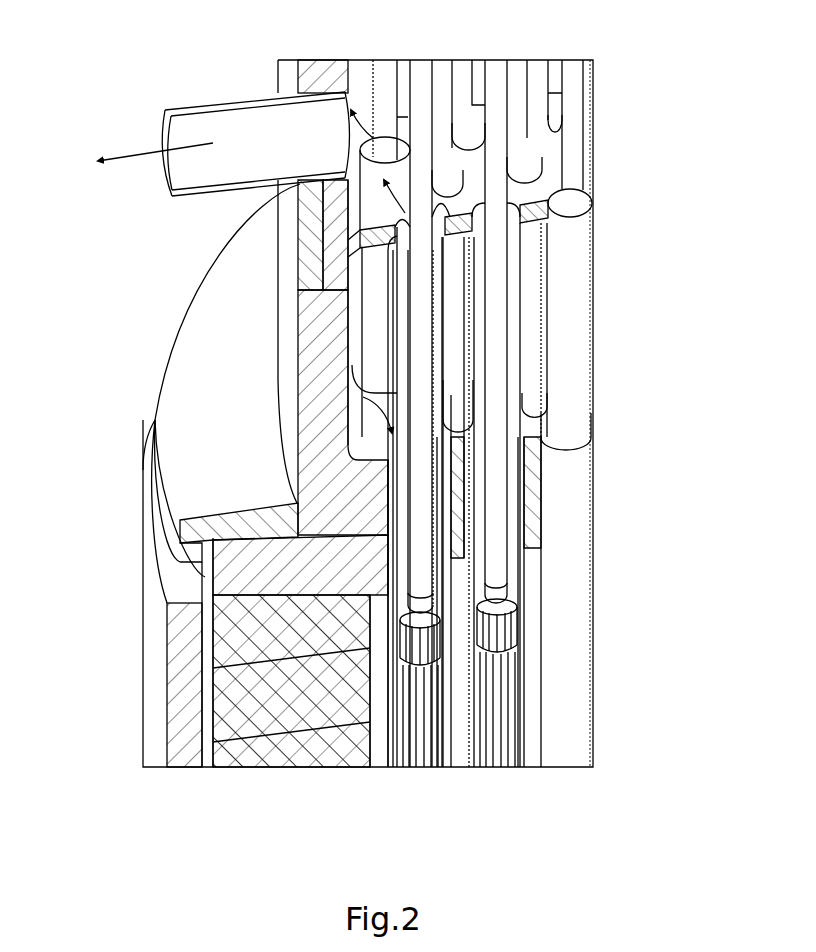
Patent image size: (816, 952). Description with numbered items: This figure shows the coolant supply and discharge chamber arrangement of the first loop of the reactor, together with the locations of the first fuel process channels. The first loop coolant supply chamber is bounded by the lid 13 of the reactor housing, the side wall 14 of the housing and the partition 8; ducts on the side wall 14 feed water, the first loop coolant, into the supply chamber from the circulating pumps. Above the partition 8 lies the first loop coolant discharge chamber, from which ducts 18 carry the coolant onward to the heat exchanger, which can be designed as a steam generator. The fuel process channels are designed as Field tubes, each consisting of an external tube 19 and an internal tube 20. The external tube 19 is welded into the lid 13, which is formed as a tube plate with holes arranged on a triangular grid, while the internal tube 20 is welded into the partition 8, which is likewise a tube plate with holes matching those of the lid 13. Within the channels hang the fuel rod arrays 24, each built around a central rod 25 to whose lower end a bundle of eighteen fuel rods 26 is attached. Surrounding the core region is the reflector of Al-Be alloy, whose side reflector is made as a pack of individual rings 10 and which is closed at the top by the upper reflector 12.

The partition 8 is at (307, 235).
The individual rings 10 is at (232, 643).
The upper reflector 12 is at (223, 580).
The lid 13 is at (175, 402).
The side wall 14 is at (307, 370).
The ducts 18 is at (247, 130).
The external tube 19 is at (578, 470).
The internal tube 20 is at (580, 262).
The fuel rod array 24 is at (500, 617).
The central rod 25 is at (493, 402).
The fuel rods 26 is at (507, 670).